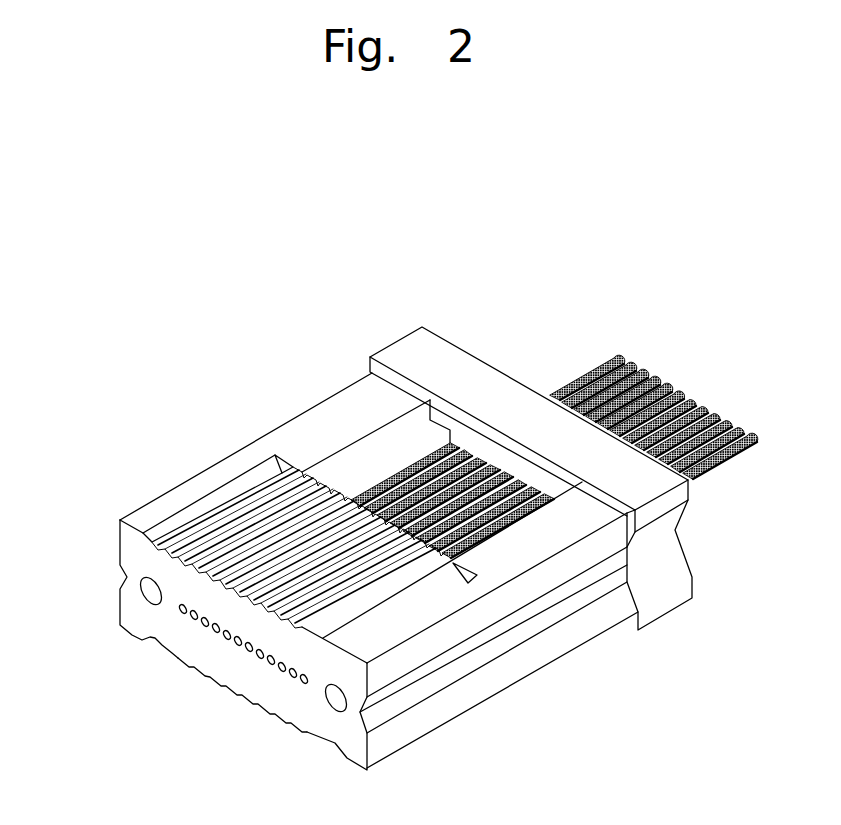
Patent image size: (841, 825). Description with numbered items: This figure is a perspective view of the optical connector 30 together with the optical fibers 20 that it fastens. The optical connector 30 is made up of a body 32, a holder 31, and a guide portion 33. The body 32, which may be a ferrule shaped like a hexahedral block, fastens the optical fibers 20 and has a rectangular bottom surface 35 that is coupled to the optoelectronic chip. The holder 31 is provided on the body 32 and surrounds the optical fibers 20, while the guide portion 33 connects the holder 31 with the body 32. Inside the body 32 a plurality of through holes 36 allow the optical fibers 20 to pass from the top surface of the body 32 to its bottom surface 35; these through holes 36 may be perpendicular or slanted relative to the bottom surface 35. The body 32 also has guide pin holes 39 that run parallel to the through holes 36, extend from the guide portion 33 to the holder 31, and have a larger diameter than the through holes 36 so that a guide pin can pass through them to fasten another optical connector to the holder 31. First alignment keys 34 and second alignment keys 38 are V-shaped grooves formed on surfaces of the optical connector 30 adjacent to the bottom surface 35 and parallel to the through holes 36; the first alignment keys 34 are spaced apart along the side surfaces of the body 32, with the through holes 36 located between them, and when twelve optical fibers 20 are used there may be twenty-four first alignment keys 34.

The optical fibers 20 is at (608, 360).
The optical connector 30 is at (230, 393).
The holder 31 is at (660, 482).
The body 32 is at (387, 738).
The guide portion 33 is at (515, 548).
The first alignment keys 34 is at (242, 590).
The bottom surface 35 is at (165, 622).
The through holes 36 is at (257, 662).
The second alignment keys 38 is at (121, 576).
The guide pin holes 39 is at (330, 693).